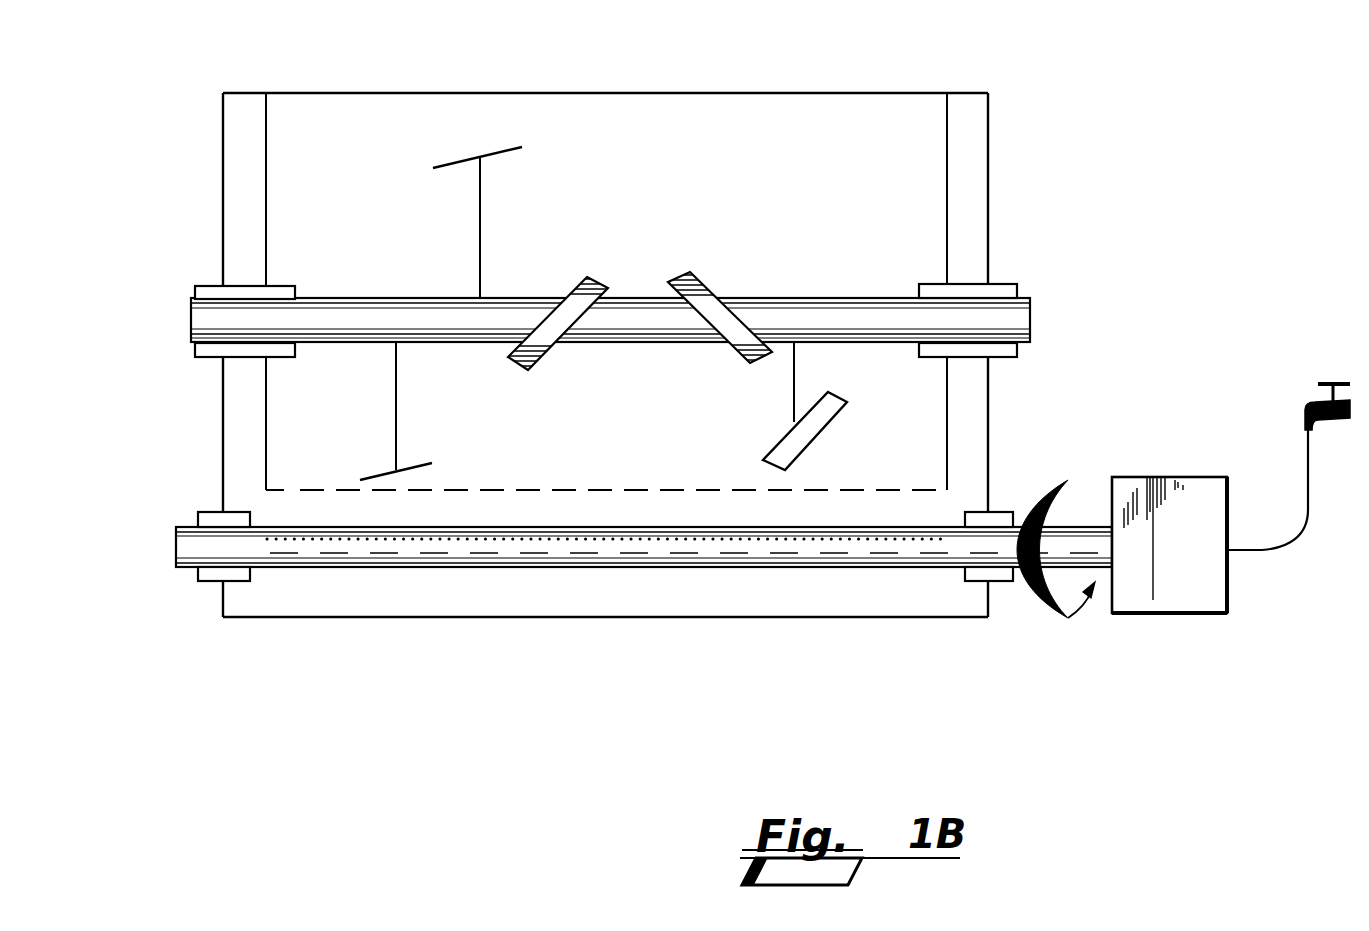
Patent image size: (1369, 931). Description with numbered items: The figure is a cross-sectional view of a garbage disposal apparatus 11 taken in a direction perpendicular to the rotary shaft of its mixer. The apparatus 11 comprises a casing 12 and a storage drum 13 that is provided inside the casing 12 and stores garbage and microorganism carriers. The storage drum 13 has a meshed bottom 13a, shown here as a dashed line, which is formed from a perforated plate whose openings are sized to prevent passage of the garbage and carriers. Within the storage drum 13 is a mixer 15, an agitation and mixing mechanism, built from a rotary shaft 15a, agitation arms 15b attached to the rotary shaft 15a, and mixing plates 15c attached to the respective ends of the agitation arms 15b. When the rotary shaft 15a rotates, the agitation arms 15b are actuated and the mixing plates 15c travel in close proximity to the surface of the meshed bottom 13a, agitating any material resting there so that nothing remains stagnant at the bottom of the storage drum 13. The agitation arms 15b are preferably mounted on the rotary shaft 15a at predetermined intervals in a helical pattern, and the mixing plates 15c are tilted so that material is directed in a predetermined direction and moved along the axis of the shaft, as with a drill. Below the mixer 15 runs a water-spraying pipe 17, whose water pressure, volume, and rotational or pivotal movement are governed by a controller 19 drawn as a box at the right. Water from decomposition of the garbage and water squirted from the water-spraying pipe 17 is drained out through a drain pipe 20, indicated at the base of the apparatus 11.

The garbage disposal apparatus 11 is at (1085, 172).
The casing 12 is at (223, 202).
The storage drum 13 is at (873, 143).
The meshed bottom 13a is at (613, 455).
The mixer 15 is at (1030, 313).
The rotary shaft 15a is at (355, 315).
The agitation arms 15b is at (398, 392).
The mixing plates 15c is at (428, 463).
The water-spraying pipe 17 is at (598, 602).
The controller 19 is at (1168, 600).
The drain pipe 20 is at (293, 645).